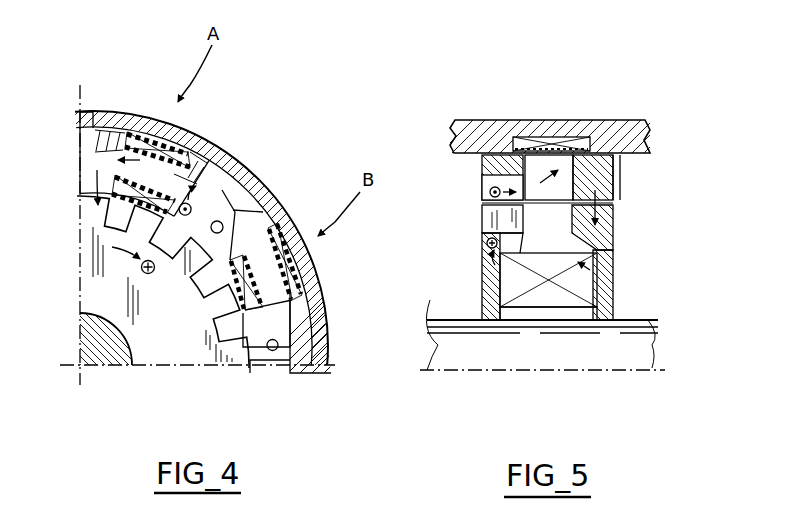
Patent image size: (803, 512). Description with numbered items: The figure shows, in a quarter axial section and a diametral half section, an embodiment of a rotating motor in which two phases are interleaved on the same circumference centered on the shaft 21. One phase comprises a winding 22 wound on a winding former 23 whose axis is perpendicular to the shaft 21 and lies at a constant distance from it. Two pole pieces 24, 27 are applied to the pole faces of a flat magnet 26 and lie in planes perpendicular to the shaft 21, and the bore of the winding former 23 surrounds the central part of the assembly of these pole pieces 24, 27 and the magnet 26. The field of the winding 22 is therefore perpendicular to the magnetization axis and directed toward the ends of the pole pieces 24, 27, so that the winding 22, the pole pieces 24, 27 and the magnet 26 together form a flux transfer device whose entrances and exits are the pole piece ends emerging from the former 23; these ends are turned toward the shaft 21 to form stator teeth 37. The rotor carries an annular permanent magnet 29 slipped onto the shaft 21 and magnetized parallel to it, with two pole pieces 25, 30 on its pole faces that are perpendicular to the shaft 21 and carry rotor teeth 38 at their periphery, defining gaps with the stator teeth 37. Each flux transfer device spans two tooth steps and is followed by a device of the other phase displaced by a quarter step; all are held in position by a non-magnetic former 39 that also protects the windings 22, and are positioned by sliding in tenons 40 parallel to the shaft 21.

In FIG. 4, the shaft 21 is at (95, 346).
In FIG. 5, the shaft 21 is at (448, 320).
In FIG. 4, the winding 22 is at (189, 150).
In FIG. 5, the winding 22 is at (598, 145).
In FIG. 4, the winding former 23 is at (127, 126).
In FIG. 4, the pole piece 24 is at (83, 150).
In FIG. 5, the pole piece 24 is at (612, 170).
In FIG. 4, the pole piece 25 is at (95, 258).
In FIG. 5, the pole piece 25 is at (606, 306).
In FIG. 5, the flat magnet 26 is at (554, 143).
In FIG. 5, the pole piece 27 is at (482, 188).
In FIG. 5, the permanent magnet 29 is at (604, 290).
In FIG. 5, the pole piece 30 is at (482, 275).
In FIG. 4, the stator teeth 37 is at (82, 189).
In FIG. 5, the stator teeth 37 is at (612, 196).
In FIG. 4, the rotor teeth 38 is at (100, 214).
In FIG. 5, the rotor teeth 38 is at (614, 222).
In FIG. 4, the non-magnetic former 39 is at (262, 206).
In FIG. 5, the non-magnetic former 39 is at (495, 122).
In FIG. 4, the tenons 40 is at (214, 205).